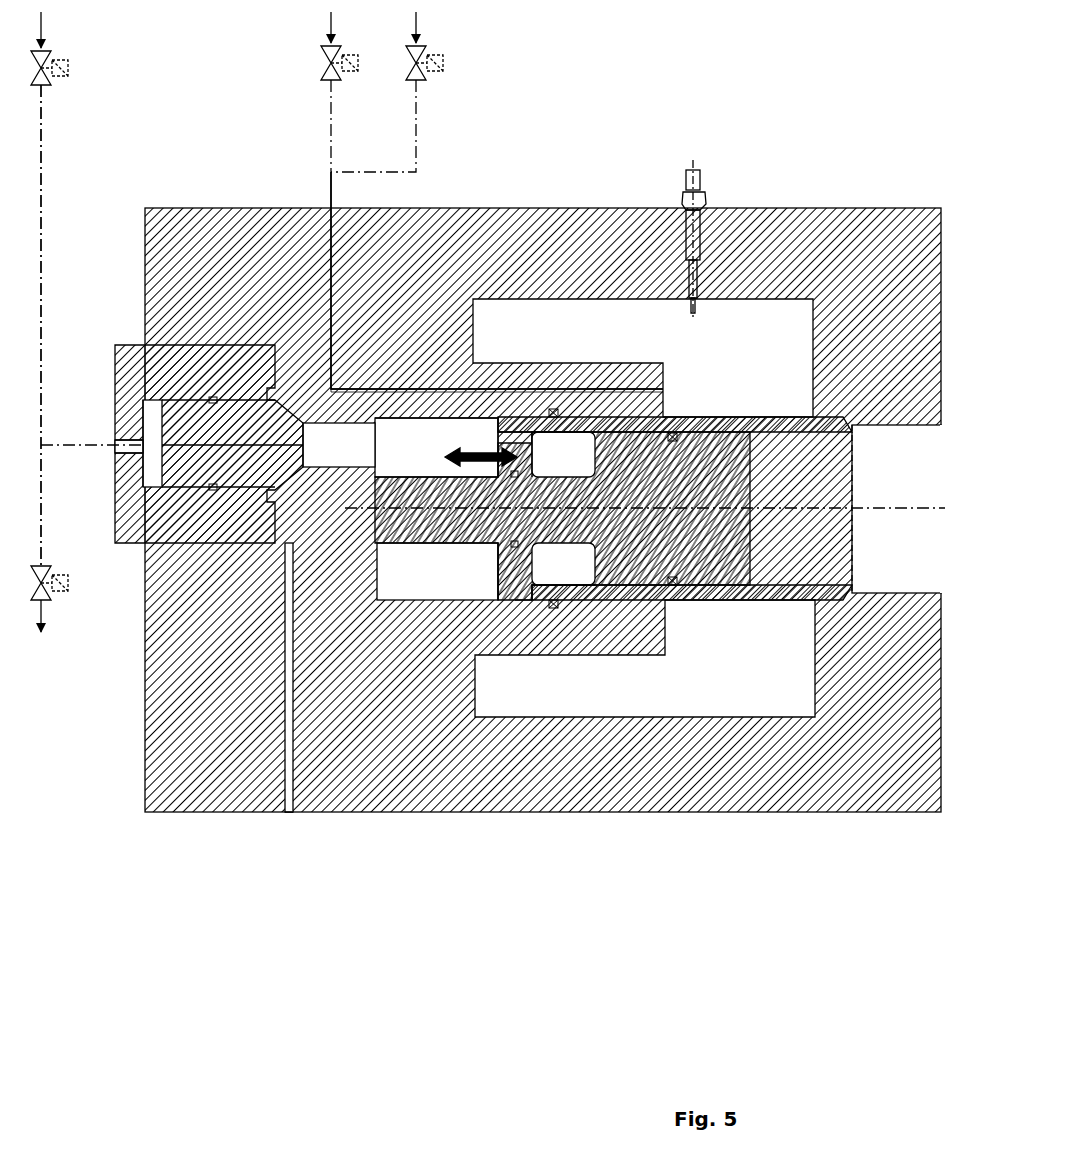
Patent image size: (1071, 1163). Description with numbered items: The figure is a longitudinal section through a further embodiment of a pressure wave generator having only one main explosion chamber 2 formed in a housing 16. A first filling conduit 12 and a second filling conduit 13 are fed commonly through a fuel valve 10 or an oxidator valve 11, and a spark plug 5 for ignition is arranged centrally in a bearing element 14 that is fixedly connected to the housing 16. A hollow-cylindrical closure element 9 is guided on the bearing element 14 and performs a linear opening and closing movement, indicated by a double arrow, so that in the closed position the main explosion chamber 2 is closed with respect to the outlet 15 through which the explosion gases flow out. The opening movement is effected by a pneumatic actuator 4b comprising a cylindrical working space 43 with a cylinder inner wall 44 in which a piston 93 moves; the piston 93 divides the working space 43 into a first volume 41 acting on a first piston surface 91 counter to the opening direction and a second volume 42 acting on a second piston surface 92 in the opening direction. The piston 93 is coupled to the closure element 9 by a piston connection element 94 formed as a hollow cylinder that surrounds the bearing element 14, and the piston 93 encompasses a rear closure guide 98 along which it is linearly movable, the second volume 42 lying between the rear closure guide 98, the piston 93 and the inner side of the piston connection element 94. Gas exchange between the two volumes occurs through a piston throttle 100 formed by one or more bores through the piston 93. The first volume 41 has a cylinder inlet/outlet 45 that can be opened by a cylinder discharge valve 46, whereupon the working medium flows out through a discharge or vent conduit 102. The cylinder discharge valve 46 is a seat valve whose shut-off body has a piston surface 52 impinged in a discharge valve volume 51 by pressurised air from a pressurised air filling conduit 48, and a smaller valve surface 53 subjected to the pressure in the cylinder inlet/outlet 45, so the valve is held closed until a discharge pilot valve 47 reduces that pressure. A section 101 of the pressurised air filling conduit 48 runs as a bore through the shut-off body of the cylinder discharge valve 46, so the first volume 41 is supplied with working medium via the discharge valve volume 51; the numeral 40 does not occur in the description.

The main explosion chamber 2 is at (757, 323).
The pneumatic actuator 4b is at (180, 421).
The spark plug 5 is at (693, 164).
The closure element 9 is at (766, 425).
The fuel valve 10 is at (320, 64).
The oxidator valve 11 is at (406, 64).
The first filling conduit 12 is at (330, 182).
The second filling conduit 13 is at (497, 280).
The bearing element 14 is at (742, 515).
The outlet 15 is at (898, 490).
The housing 16 is at (266, 216).
The valve 40 is at (48, 72).
The first volume 41 is at (465, 440).
The second volume 42 is at (565, 453).
The working space 43 is at (500, 158).
The cylinder inner wall 44 is at (428, 424).
The cylinder inlet/outlet 45 is at (356, 466).
The cylinder discharge valve 46 is at (168, 478).
The discharge pilot valve 47 is at (48, 587).
The pressurised air filling conduit 48 is at (44, 210).
The discharge valve volume 51 is at (154, 400).
The piston surface 52 is at (145, 420).
The valve surface 53 is at (312, 437).
The first piston surface 91 is at (492, 568).
The second piston surface 92 is at (540, 568).
The piston 93 is at (517, 588).
The piston connection element 94 is at (582, 593).
The rear closure guide 98 is at (463, 534).
The piston throttle 100 is at (517, 440).
The section of the pressurised air filling conduit 101 is at (200, 448).
The discharge or vent conduit 102 is at (289, 826).